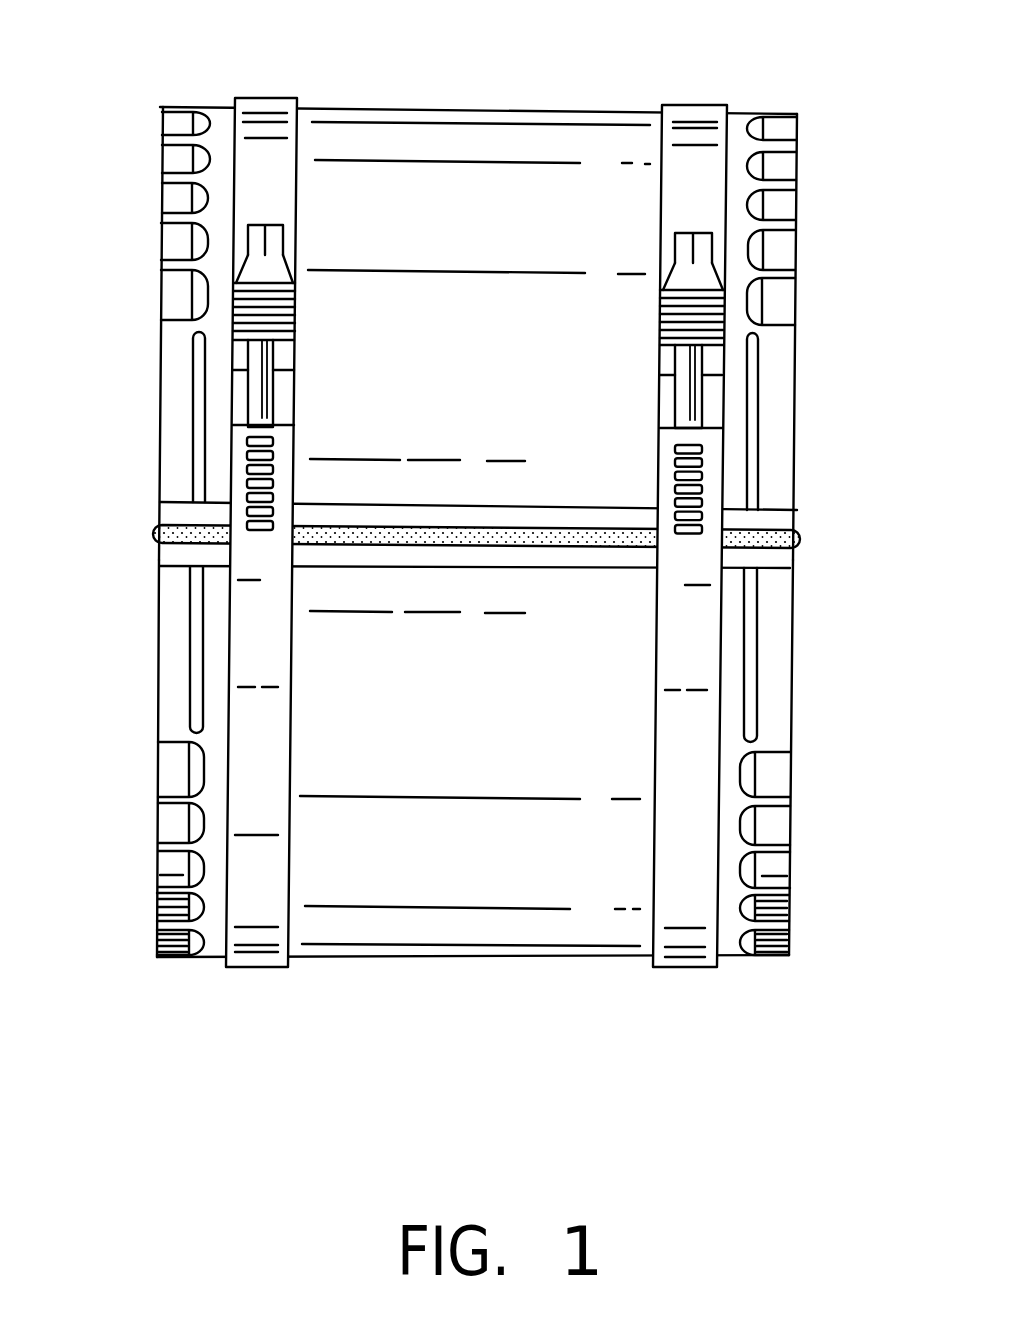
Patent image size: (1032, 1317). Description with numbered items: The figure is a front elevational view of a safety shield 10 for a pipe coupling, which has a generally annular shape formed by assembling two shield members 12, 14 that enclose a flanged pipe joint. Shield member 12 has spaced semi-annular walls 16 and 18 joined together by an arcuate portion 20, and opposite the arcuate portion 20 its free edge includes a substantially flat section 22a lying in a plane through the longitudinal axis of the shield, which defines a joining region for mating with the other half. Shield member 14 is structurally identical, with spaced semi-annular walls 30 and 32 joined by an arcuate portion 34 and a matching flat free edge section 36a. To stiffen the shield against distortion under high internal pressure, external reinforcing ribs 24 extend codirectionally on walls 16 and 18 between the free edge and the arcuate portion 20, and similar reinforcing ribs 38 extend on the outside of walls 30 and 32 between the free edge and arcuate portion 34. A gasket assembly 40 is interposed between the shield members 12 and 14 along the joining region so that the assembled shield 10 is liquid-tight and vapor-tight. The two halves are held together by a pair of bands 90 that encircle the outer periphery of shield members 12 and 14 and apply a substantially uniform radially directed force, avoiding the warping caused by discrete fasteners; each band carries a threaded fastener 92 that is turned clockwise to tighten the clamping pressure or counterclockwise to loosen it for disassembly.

The safety shield 10 is at (472, 520).
The shield member 12 is at (615, 222).
The shield member 14 is at (618, 847).
The semi-annular wall 16 is at (197, 457).
The semi-annular wall 18 is at (755, 452).
The arcuate portion 20 is at (405, 132).
The flat section of free edge 22a is at (448, 503).
The external reinforcing ribs 24 is at (183, 295).
The semi-annular wall 30 is at (197, 715).
The semi-annular wall 32 is at (755, 685).
The arcuate portion 34 is at (448, 926).
The flat section of free edge 36a is at (615, 570).
The reinforcing ribs 38 is at (175, 875).
The gasket assembly 40 is at (155, 530).
The bands 90 is at (262, 756).
The threaded fastener 92 is at (265, 368).